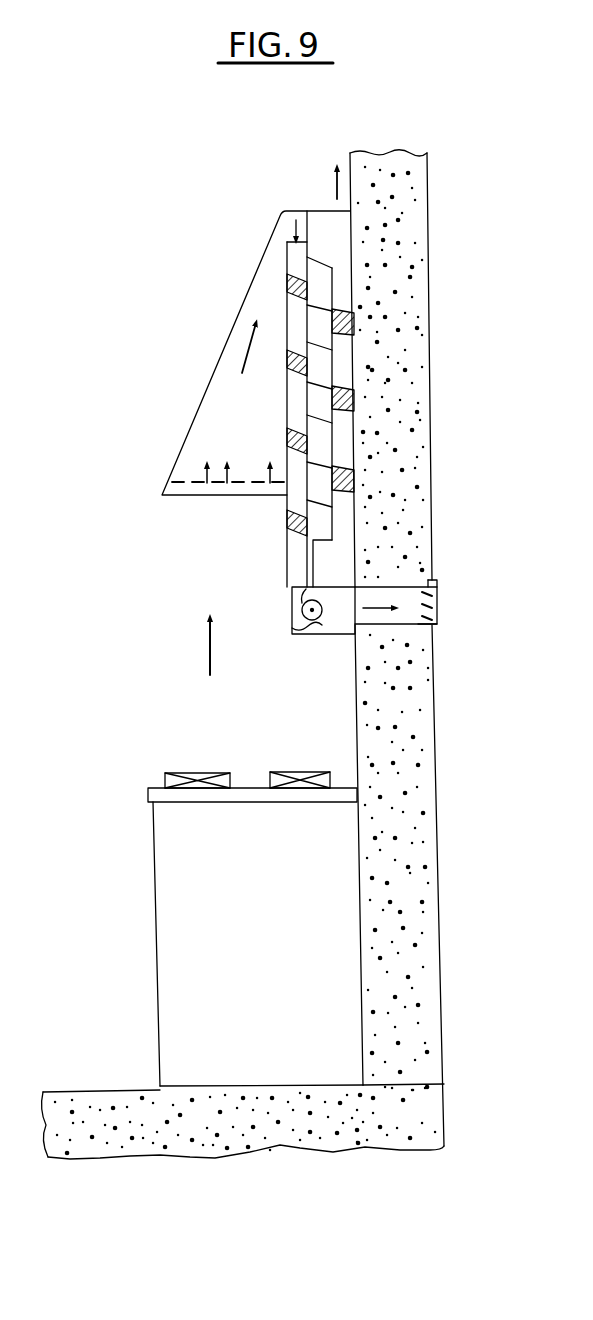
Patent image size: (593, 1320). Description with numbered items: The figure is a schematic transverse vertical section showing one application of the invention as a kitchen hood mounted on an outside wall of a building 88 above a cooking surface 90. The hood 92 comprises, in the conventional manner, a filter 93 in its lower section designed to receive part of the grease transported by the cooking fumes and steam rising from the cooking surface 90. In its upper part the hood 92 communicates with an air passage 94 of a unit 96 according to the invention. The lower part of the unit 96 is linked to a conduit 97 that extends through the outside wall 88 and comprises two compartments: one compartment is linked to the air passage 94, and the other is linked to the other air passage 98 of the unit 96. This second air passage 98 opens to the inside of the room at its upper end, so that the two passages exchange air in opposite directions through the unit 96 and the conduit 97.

The outside wall of a building 88 is at (375, 692).
The cooking surface 90 is at (241, 783).
The hood 92 is at (235, 320).
The filter 93 is at (190, 483).
The air passage 94 is at (287, 400).
The unit 96 is at (291, 561).
The conduit 97 is at (404, 598).
The air passage 98 is at (352, 353).